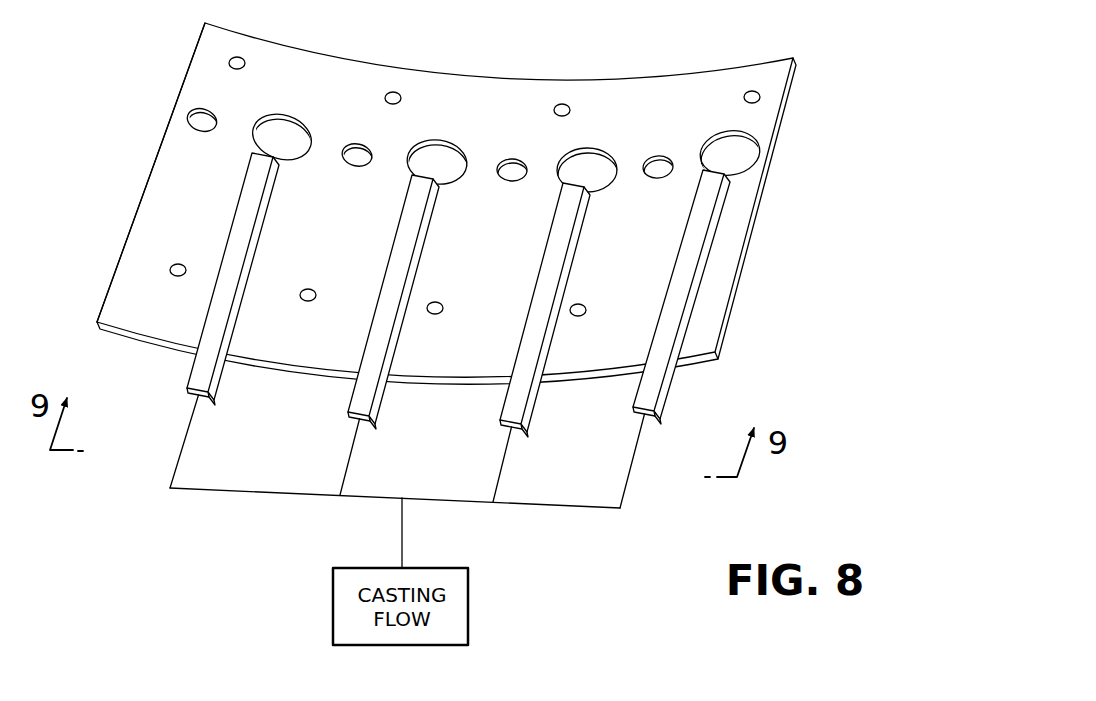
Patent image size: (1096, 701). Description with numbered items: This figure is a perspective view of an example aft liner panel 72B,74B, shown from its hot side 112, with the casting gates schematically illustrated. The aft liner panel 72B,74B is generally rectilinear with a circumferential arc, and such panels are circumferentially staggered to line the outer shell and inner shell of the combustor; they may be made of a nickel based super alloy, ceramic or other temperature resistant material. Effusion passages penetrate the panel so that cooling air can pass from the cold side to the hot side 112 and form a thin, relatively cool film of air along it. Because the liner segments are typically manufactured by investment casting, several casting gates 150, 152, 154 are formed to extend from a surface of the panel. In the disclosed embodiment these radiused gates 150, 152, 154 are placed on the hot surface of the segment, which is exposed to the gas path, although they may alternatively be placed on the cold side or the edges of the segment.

The hot side 112 is at (663, 92).
The aft liner panels 72B,74B is at (800, 98).
The casting gate 150 is at (243, 207).
The casting gate 152 is at (395, 262).
The casting gate 154 is at (545, 262).